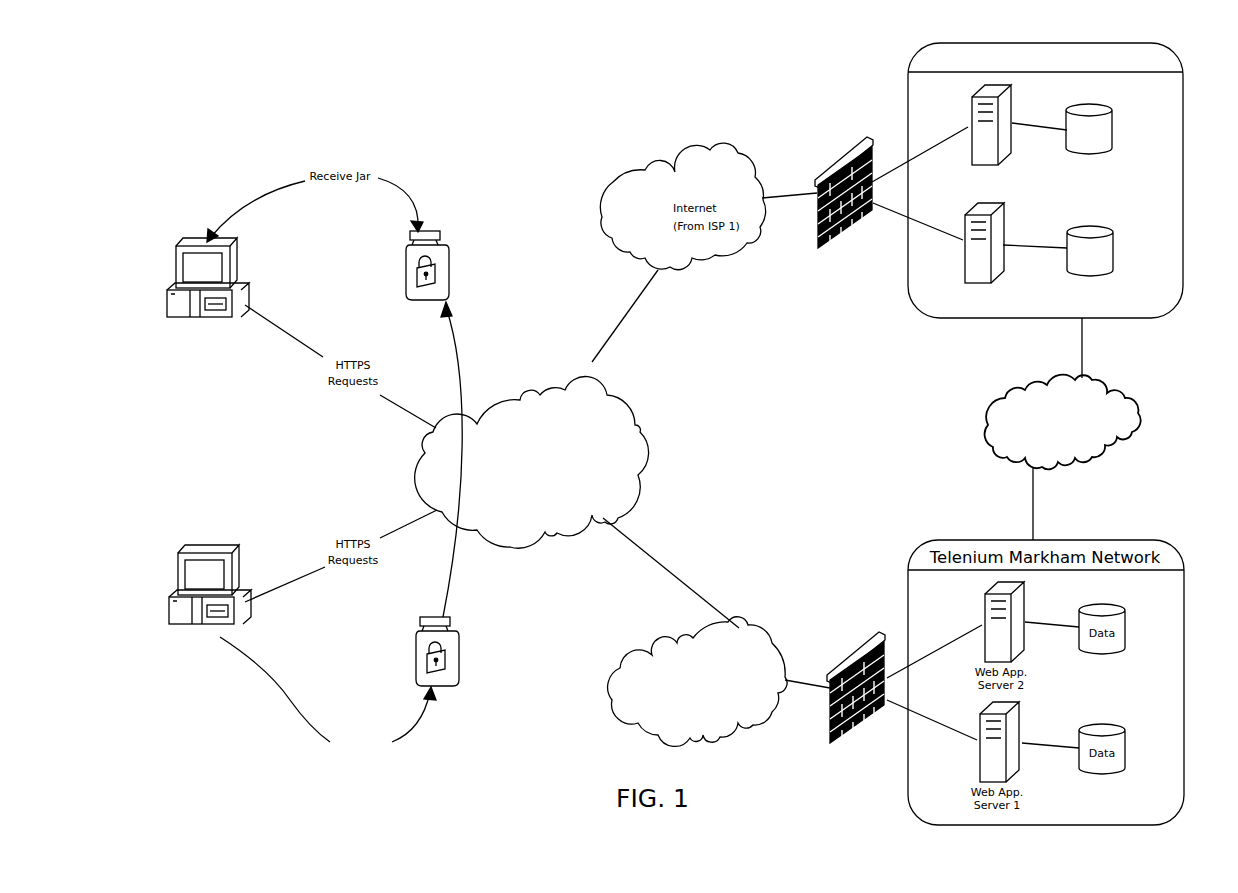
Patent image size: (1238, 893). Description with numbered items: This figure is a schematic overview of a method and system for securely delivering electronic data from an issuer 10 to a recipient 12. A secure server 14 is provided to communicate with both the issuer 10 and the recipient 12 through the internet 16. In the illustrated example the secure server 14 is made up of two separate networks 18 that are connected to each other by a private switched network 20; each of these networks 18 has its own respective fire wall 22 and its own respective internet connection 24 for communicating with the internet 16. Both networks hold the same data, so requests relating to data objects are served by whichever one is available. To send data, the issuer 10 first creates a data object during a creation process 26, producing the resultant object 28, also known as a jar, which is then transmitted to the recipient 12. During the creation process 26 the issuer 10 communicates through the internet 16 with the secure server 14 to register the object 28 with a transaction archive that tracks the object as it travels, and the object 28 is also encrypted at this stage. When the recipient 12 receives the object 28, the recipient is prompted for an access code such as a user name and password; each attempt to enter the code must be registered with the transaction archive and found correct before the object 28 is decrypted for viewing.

The issuer 10 is at (207, 547).
The recipient 12 is at (185, 234).
The secure server 14 is at (910, 100).
The internet 16 is at (641, 433).
The separate networks 18 is at (1170, 52).
The private switched network 20 is at (1005, 435).
The fire wall 22 is at (850, 656).
The internet connection 24 is at (761, 653).
The creation process 26 is at (378, 752).
The object 28 is at (449, 268).